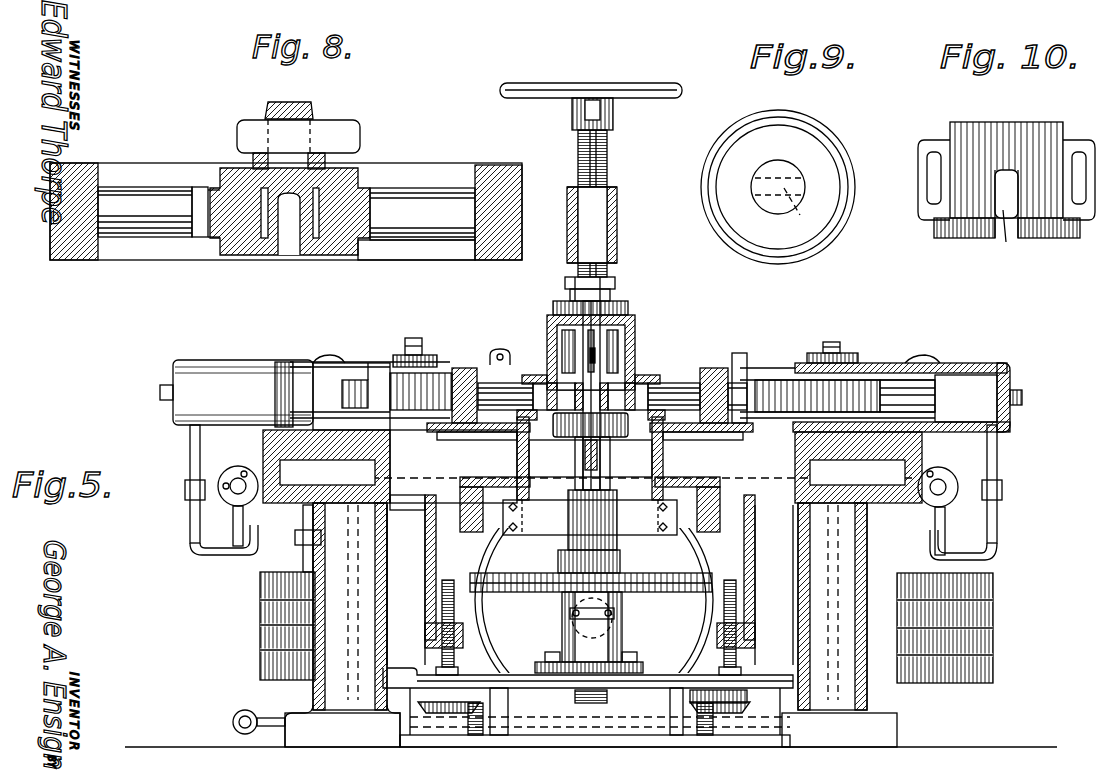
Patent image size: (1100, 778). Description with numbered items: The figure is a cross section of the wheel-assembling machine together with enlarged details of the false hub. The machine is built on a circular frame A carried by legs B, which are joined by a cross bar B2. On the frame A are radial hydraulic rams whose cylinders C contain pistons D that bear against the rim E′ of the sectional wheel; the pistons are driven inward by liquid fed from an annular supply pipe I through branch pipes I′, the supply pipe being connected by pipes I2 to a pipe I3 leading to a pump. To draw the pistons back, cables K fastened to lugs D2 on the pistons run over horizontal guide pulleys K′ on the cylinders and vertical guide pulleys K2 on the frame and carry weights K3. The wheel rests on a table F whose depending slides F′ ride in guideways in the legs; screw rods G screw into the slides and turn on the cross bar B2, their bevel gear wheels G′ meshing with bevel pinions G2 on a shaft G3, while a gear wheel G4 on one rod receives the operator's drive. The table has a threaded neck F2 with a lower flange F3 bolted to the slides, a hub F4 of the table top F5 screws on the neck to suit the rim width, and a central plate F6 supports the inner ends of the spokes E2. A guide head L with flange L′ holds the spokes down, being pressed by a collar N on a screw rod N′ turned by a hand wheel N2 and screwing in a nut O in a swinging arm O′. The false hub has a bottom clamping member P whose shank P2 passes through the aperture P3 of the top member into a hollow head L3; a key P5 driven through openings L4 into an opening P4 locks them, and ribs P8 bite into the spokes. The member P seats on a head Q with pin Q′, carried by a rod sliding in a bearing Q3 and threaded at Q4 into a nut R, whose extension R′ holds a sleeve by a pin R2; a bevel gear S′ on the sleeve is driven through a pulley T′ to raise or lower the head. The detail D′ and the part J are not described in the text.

In FIG. 5, the circular frame A is at (265, 442).
In FIG. 5, the standards or legs B is at (372, 595).
In FIG. 5, the cross bar B2 is at (518, 676).
In FIG. 5, the cylinders C is at (233, 372).
In FIG. 5, the pistons D is at (430, 378).
In FIG. 5, the splined gear D′ is at (400, 372).
In FIG. 5, the upwardly-extending lugs D2 is at (505, 350).
In FIG. 8, the rim E′ is at (195, 165).
In FIG. 5, the rim E′ is at (460, 368).
In FIG. 8, the spokes E2 is at (82, 172).
In FIG. 5, the spokes E2 is at (682, 352).
In FIG. 5, the table F is at (567, 458).
In FIG. 5, the depending slides F′ is at (436, 534).
In FIG. 5, the cylindrical neck F2 is at (663, 458).
In FIG. 5, the flange F3 is at (700, 478).
In FIG. 5, the hub F4 is at (529, 440).
In FIG. 5, the table top F5 is at (440, 437).
In FIG. 5, the central apertured plate F6 is at (554, 396).
In FIG. 5, the screw rods G is at (442, 620).
In FIG. 5, the bevel gear wheels G′ is at (440, 713).
In FIG. 5, the bevel pinions G2 is at (476, 735).
In FIG. 5, the shaft G3 is at (652, 728).
In FIG. 5, the gear wheel G4 is at (708, 690).
In FIG. 5, the annular supply pipe I is at (232, 500).
In FIG. 5, the branch pipes I′ is at (190, 458).
In FIG. 5, the pipes I2 is at (352, 592).
In FIG. 5, the pipe I3 is at (240, 712).
In FIG. 5, the key J is at (342, 400).
In FIG. 5, the ropes or cables K is at (485, 362).
In FIG. 5, the guide pulleys K′ is at (410, 338).
In FIG. 5, the guide pulleys K2 is at (325, 362).
In FIG. 5, the weights K3 is at (262, 600).
In FIG. 5, the guide head L is at (615, 320).
In FIG. 5, the outwardly-extending flange L′ is at (640, 372).
In FIG. 10, the hollow head L3 is at (1040, 130).
In FIG. 10, the openings L4 is at (1012, 239).
In FIG. 5, the collar N is at (565, 295).
In FIG. 5, the screw rod N′ is at (607, 150).
In FIG. 5, the hand wheel N2 is at (625, 82).
In FIG. 5, the nut O is at (609, 208).
In FIG. 5, the arm O′ is at (566, 208).
In FIG. 9, the bottom clamping member P is at (818, 140).
In FIG. 5, the bottom clamping member P is at (628, 412).
In FIG. 8, the central shank P2 is at (266, 104).
In FIG. 9, the central shank P2 is at (772, 162).
In FIG. 5, the central shank P2 is at (583, 340).
In FIG. 8, the central aperture P3 is at (220, 178).
In FIG. 8, the opening P4 is at (312, 112).
In FIG. 9, the opening P4 is at (781, 207).
In FIG. 5, the opening P4 is at (596, 350).
In FIG. 8, the key P5 is at (345, 132).
In FIG. 8, the annular ribs P8 is at (220, 246).
In FIG. 9, the annular ribs P8 is at (838, 205).
In FIG. 5, the head Q is at (618, 437).
In FIG. 5, the central pin Q′ is at (585, 466).
In FIG. 5, the bearing Q3 is at (575, 520).
In FIG. 5, the screw thread Q4 is at (607, 697).
In FIG. 5, the nut R is at (622, 648).
In FIG. 5, the cylindrical extension R′ is at (572, 626).
In FIG. 5, the pin R2 is at (615, 608).
In FIG. 5, the bevel gear wheel S′ is at (650, 586).
In FIG. 5, the pulley T′ is at (478, 600).